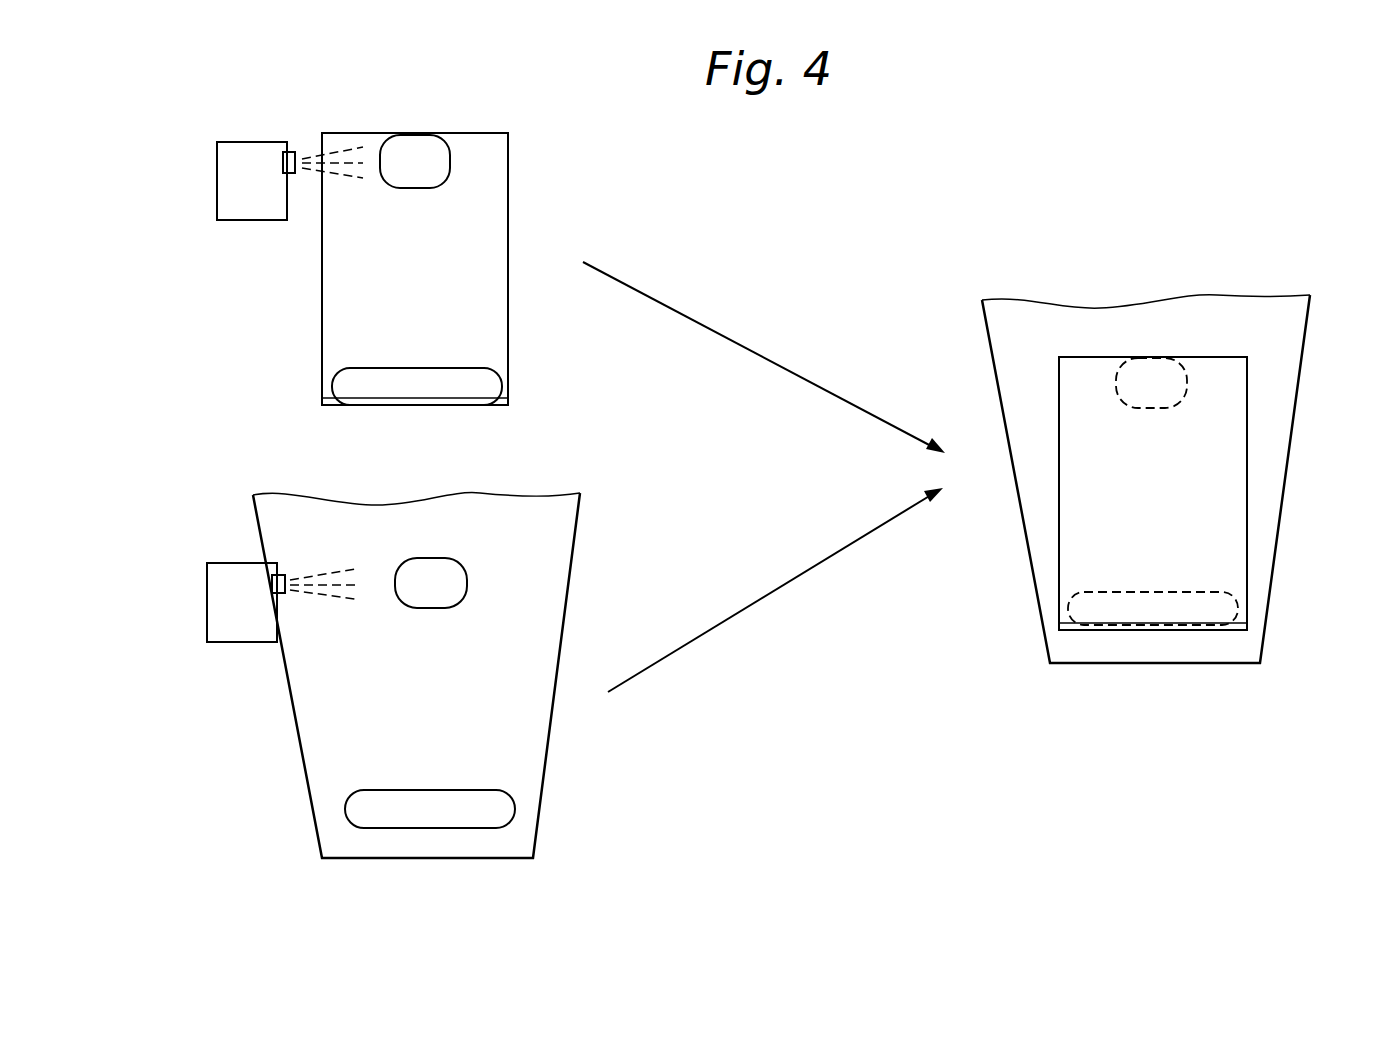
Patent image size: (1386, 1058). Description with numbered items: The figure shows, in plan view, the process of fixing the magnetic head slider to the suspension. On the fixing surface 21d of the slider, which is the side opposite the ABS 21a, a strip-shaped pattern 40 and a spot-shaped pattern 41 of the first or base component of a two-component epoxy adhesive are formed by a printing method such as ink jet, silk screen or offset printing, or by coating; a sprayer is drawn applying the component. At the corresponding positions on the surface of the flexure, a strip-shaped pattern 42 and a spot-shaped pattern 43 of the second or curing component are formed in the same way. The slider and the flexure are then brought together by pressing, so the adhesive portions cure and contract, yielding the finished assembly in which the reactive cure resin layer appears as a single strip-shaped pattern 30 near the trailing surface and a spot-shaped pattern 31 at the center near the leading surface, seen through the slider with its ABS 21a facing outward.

The fixing surface 21d is at (447, 297).
The ABS 21a is at (1184, 519).
The strip-shaped pattern 30 is at (1240, 600).
The spot-shaped pattern 31 is at (1187, 375).
The strip-shaped pattern 40 is at (332, 385).
The spot-shaped pattern 41 is at (445, 147).
The strip-shaped pattern 42 is at (518, 800).
The spot-shaped pattern 43 is at (467, 578).